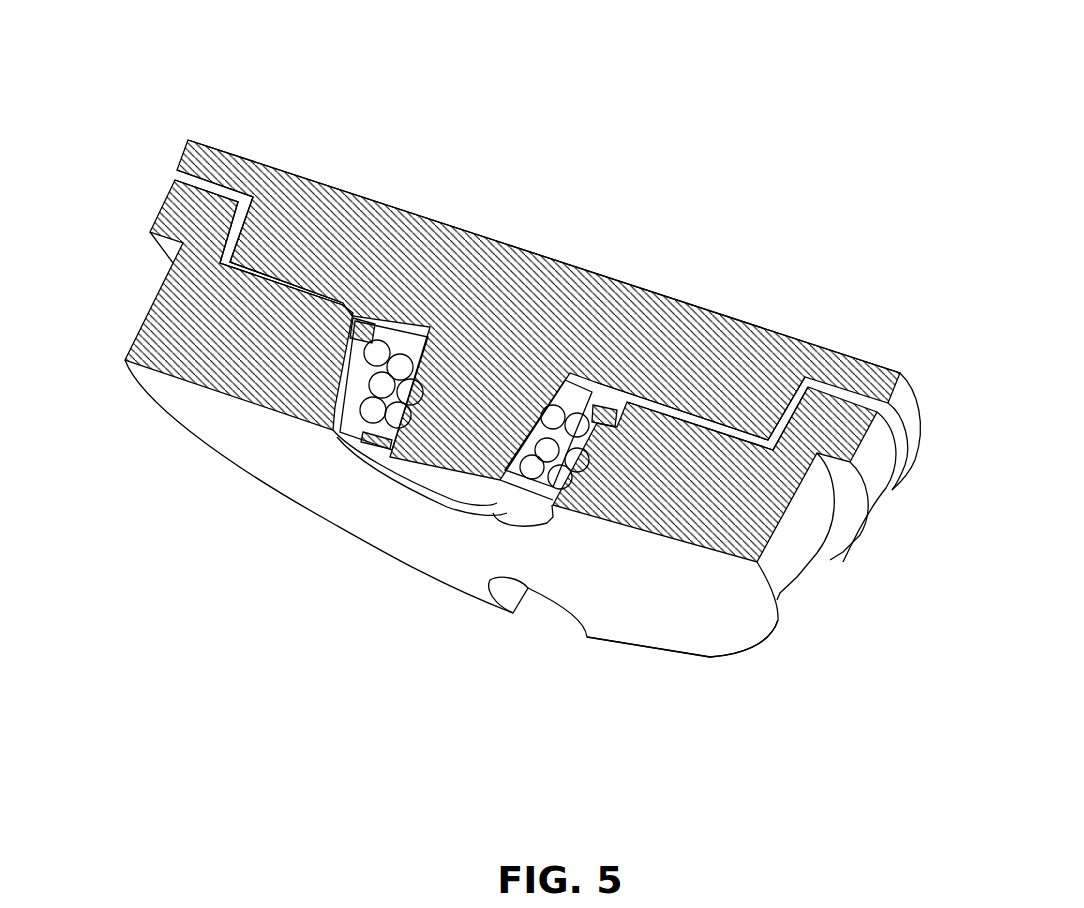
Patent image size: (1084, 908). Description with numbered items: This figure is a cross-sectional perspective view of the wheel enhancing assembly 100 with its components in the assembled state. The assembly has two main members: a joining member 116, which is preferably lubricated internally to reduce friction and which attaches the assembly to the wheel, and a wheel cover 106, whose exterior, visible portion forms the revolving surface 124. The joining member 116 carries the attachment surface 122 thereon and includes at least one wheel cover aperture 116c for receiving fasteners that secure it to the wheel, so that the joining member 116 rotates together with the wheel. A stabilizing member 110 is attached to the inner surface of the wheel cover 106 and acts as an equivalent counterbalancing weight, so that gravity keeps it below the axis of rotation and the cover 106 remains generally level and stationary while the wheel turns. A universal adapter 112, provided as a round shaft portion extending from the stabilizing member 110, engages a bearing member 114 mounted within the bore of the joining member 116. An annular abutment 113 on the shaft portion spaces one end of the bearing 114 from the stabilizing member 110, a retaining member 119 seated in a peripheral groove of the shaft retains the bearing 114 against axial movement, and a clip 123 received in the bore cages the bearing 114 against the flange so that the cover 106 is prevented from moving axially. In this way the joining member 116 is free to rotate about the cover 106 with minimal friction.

The wheel enhancing assembly 100 is at (840, 186).
The wheel cover 106 is at (188, 138).
The stabilizing member 110 is at (293, 272).
The universal adapter 112 is at (446, 485).
The annular abutment 113 is at (408, 317).
The bearing member 114 is at (348, 310).
The joining member 116 is at (153, 238).
The wheel cover aperture 116c is at (567, 610).
The retaining member 119 is at (508, 498).
The attachment surface 122 is at (690, 603).
The clip 123 is at (592, 400).
The revolving surface 124 is at (785, 335).